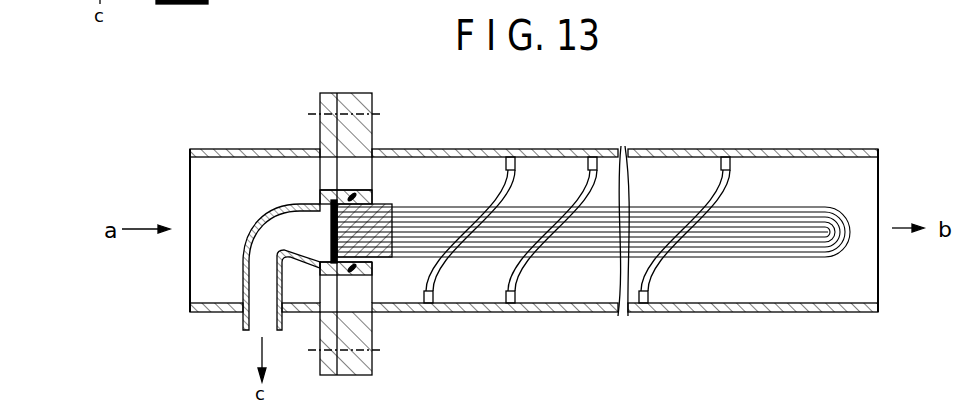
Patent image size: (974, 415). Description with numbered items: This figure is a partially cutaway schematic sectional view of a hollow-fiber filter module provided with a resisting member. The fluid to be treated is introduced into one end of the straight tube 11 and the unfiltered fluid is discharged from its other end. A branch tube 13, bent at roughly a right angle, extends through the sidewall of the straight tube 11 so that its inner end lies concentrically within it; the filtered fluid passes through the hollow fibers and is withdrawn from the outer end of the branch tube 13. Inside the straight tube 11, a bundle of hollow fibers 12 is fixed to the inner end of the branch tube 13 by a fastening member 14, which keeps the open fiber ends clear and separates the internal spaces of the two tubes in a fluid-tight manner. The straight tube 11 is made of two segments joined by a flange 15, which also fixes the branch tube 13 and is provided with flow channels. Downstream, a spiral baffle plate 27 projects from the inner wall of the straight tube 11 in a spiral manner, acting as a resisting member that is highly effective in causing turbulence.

The straight tube 11 is at (246, 148).
The bundle of hollow fibers 12 is at (803, 206).
The branch tube 13 is at (279, 212).
The fastening member 14 is at (388, 203).
The flange 15 is at (357, 99).
The spiral baffle plate 27 is at (584, 163).